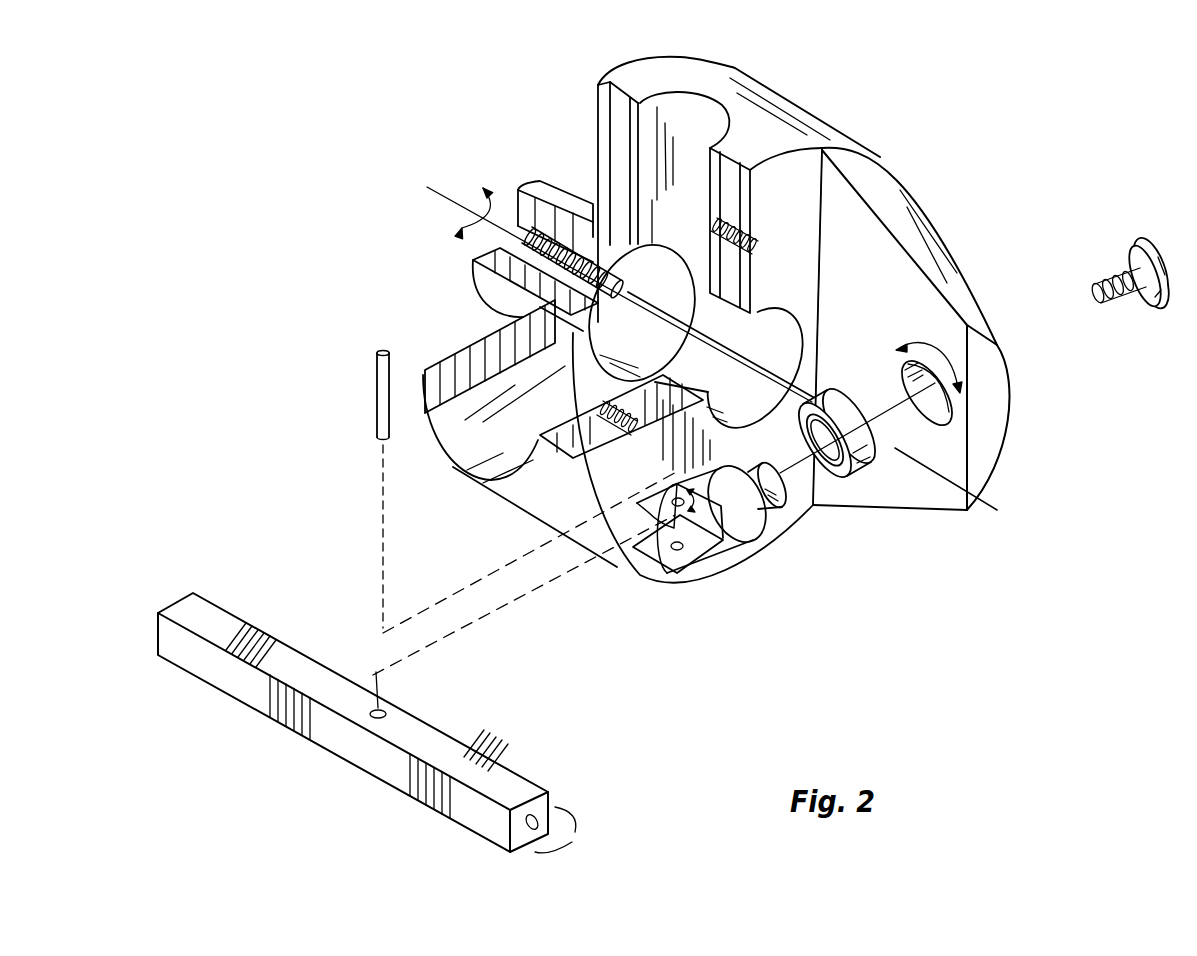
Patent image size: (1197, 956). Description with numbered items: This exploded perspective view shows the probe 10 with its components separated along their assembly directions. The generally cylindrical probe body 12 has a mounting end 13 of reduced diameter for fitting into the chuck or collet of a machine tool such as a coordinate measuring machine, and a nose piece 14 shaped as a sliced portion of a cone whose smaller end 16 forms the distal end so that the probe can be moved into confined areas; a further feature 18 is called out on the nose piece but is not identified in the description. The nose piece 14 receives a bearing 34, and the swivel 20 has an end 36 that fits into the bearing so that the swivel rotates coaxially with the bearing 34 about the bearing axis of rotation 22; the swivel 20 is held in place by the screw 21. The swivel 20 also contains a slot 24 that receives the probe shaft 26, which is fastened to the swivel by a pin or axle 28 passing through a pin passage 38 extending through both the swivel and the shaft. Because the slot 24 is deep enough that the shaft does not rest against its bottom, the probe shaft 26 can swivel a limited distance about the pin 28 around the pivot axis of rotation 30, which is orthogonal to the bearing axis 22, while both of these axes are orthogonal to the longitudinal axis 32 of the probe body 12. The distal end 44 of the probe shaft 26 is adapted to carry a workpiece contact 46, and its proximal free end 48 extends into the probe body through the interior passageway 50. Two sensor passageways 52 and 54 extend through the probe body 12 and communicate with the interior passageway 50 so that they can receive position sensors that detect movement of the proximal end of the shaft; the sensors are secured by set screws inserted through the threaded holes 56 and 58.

The probe 10 is at (717, 320).
The probe body 12 is at (745, 72).
The mounting end 13 is at (580, 183).
The nose piece 14 is at (957, 263).
The smaller end of the cone 16 is at (1002, 337).
The chamfered face 18 is at (892, 260).
The swivel 20 is at (677, 548).
The screw 21 is at (1122, 306).
The bearing axis of rotation 22 is at (957, 277).
The slot 24 is at (856, 497).
The probe shaft 26 is at (403, 780).
The pin or axle 28 is at (372, 394).
The pivot axis of rotation 30 is at (685, 510).
The longitudinal axis 32 is at (460, 237).
The bearing 34 is at (857, 470).
The swivel end 36 is at (770, 493).
The pin passage 38 is at (638, 506).
The distal end 44 is at (518, 852).
The workpiece contact 46 is at (572, 842).
The proximal free end 48 is at (160, 657).
The interior passageway 50 is at (788, 333).
The sensor passageway 52 is at (507, 438).
The sensor passageway 54 is at (697, 130).
The threaded hole 56 is at (627, 435).
The threaded hole 58 is at (760, 247).